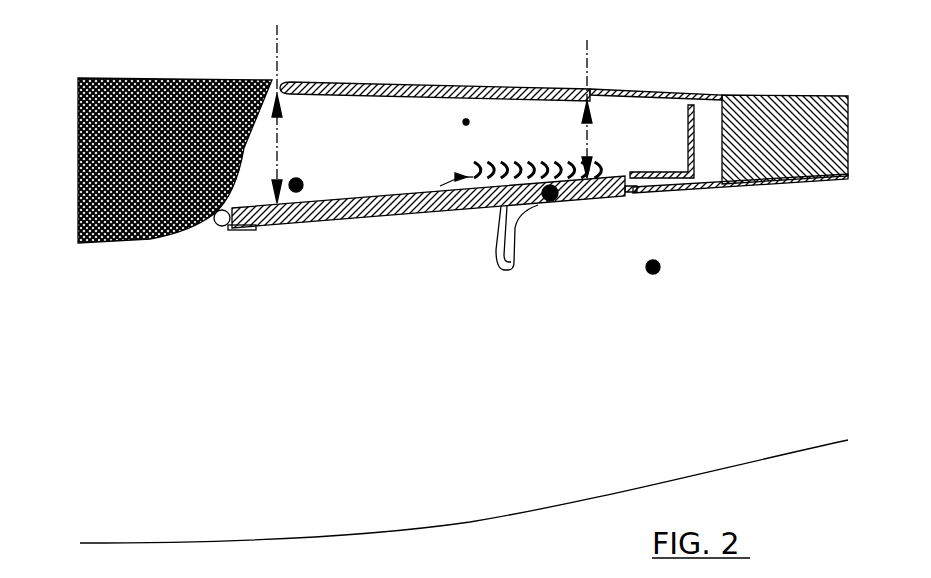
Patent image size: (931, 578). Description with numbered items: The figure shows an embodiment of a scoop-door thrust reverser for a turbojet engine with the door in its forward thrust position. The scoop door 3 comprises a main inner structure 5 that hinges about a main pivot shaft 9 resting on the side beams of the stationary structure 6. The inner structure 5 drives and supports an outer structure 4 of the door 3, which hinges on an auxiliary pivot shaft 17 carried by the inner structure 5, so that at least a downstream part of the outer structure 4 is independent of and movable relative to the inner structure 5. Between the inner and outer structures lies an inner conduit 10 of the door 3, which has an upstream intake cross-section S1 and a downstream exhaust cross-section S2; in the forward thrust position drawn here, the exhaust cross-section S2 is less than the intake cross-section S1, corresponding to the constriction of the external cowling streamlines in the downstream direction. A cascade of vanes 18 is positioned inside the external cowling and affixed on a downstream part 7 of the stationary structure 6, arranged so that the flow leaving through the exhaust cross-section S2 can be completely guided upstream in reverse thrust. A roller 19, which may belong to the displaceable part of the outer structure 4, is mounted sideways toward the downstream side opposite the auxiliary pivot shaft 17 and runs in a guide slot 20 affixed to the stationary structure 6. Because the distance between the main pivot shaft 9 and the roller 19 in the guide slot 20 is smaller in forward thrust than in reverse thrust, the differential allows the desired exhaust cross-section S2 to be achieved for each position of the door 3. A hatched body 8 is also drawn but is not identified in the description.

The scoop door 3 is at (466, 120).
The outer structure 4 is at (342, 88).
The main inner structure 5 is at (367, 210).
The stationary structure 6 is at (140, 56).
The downstream part 7 is at (752, 115).
The front body 8 is at (155, 240).
The main pivot shaft 9 is at (655, 275).
The inner conduit 10 is at (440, 150).
The auxiliary pivot shaft 17 is at (296, 192).
The cascade of vanes 18 is at (433, 207).
The roller 19 is at (556, 200).
The guide slot 20 is at (507, 290).
The upstream intake cross-section S1 is at (259, 114).
The downstream exhaust cross-section S2 is at (606, 108).